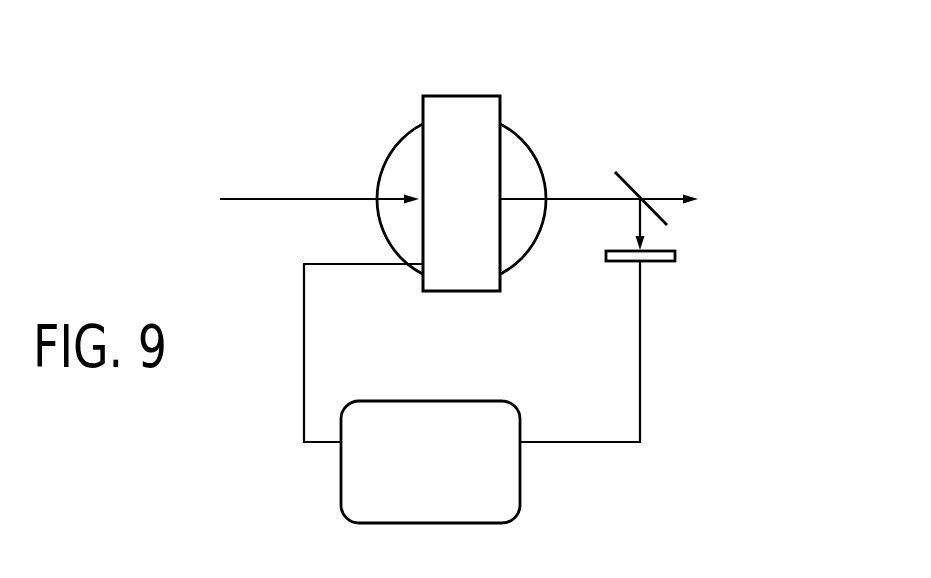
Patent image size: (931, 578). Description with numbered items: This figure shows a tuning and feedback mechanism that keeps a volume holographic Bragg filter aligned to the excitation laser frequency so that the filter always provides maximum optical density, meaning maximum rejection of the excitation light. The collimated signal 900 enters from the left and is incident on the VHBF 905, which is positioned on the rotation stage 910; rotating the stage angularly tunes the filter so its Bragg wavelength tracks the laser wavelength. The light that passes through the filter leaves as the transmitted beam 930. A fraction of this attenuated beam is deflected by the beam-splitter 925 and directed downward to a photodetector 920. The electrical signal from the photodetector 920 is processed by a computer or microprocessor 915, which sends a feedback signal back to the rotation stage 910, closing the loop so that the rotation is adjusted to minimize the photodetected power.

The collimated signal 900 is at (277, 198).
The VHBF 905 is at (462, 95).
The rotation stage 910 is at (530, 247).
The computer or microprocessor 915 is at (521, 485).
The photodetector 920 is at (658, 262).
The beam-splitter 925 is at (623, 180).
The transmitted beam 930 is at (572, 196).